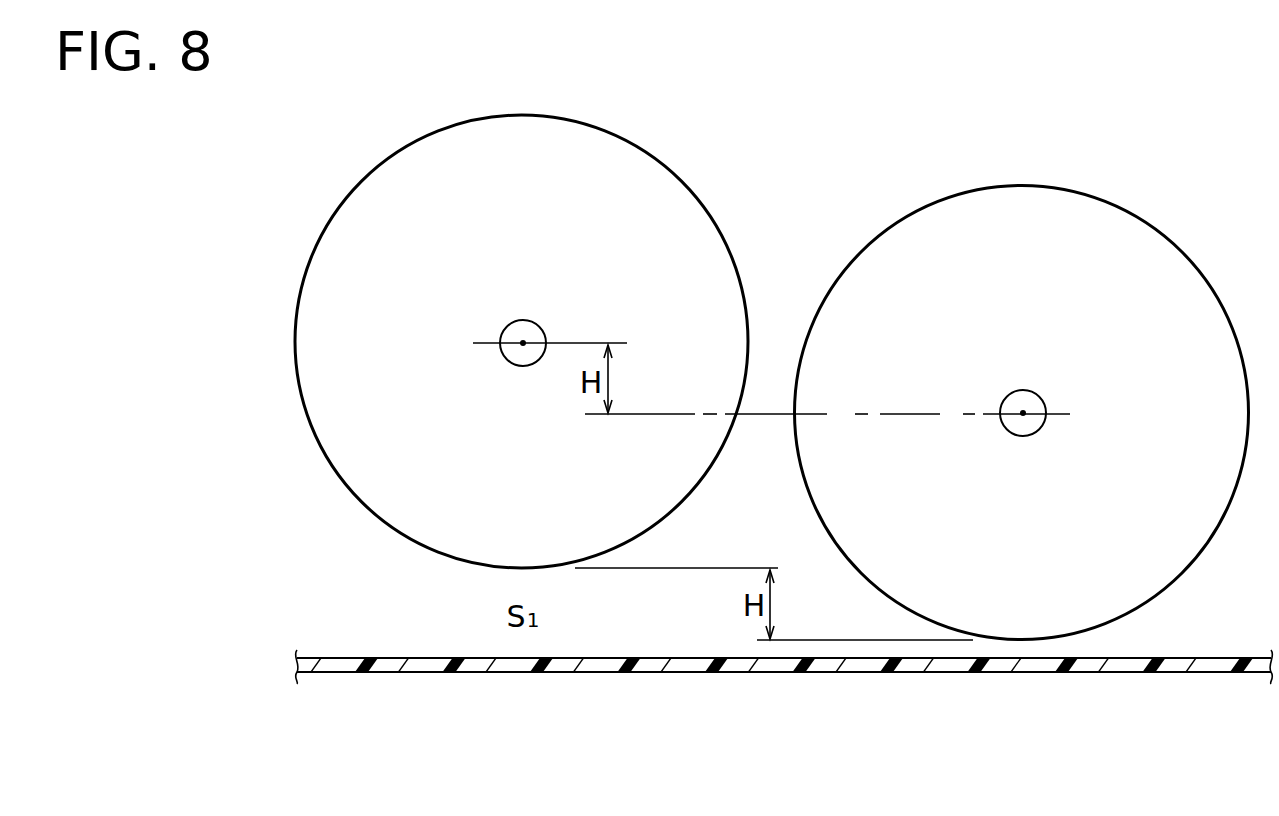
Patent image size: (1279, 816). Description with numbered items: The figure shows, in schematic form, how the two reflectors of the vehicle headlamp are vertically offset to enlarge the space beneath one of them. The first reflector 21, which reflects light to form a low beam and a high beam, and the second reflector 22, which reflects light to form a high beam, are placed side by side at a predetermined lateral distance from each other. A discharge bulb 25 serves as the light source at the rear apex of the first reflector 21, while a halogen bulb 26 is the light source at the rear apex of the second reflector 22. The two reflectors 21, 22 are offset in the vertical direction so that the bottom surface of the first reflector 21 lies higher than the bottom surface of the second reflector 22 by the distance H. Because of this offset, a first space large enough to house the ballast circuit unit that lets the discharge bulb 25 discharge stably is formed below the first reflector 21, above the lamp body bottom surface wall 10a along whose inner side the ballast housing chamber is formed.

The first reflector 21 is at (678, 188).
The second reflector 22 is at (910, 223).
The discharge bulb 25 is at (522, 320).
The halogen bulb 26 is at (1028, 390).
The lamp body bottom surface wall 10a is at (723, 673).